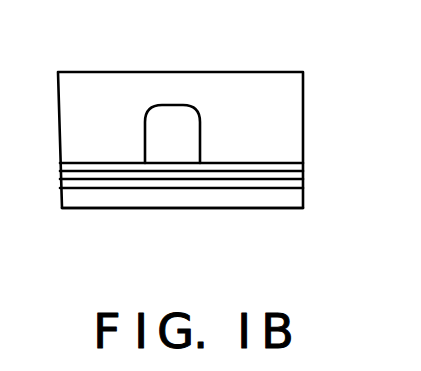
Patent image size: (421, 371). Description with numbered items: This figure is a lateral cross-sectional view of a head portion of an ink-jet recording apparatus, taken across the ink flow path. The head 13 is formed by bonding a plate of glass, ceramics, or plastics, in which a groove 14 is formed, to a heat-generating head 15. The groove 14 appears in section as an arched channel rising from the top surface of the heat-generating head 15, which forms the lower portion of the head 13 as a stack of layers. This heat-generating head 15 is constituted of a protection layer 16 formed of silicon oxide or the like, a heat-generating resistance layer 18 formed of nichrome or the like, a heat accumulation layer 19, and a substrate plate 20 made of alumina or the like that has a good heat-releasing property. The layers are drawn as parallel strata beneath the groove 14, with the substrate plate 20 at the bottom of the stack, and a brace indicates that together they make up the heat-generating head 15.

The head 13 is at (90, 70).
The groove 14 is at (200, 113).
The heat-generating head 15 is at (318, 158).
The protection layer 16 is at (248, 177).
The heat-generating resistance layer 18 is at (270, 186).
The heat accumulation layer 19 is at (300, 170).
The substrate plate 20 is at (265, 201).